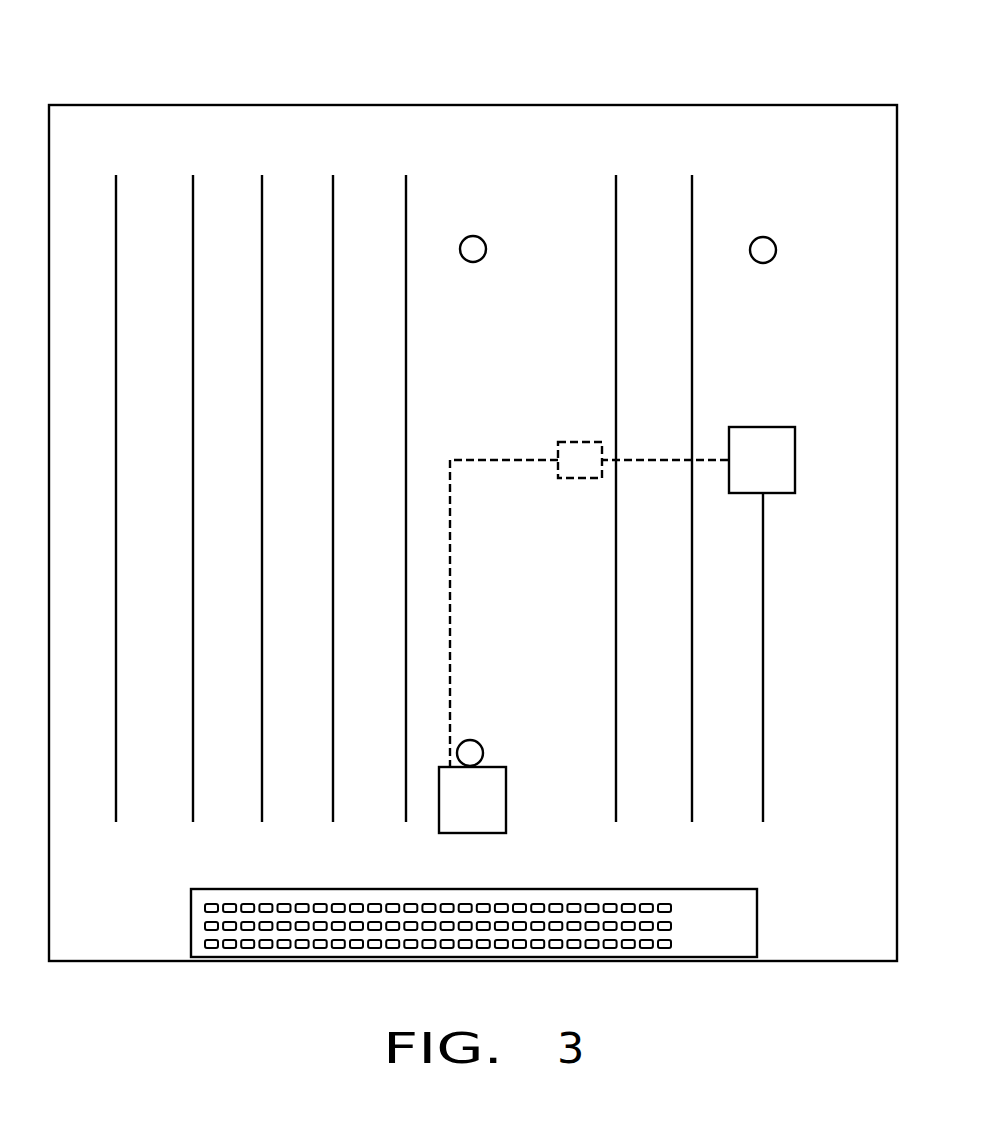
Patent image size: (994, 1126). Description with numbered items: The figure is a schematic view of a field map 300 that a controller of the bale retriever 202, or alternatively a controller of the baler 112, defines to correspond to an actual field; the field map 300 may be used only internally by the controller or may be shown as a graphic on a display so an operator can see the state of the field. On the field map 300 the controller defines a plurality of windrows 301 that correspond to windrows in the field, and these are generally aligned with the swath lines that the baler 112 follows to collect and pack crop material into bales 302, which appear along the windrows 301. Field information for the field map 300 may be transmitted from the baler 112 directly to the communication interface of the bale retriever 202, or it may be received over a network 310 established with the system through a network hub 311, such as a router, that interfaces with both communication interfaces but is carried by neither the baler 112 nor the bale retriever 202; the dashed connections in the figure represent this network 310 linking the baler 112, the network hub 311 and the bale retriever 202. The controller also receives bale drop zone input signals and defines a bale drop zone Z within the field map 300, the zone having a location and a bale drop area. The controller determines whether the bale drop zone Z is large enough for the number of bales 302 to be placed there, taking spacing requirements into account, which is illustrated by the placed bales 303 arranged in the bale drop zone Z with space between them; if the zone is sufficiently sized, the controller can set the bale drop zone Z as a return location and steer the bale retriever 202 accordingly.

The field map 300 is at (801, 94).
The windrows 301 is at (116, 190).
The bales 302 is at (482, 259).
The network 310 is at (579, 430).
The network hub 311 is at (558, 448).
The baler 112 is at (808, 440).
The bale retriever 202 is at (521, 778).
The placed bales 303 is at (301, 895).
The bale drop zone Z is at (621, 875).